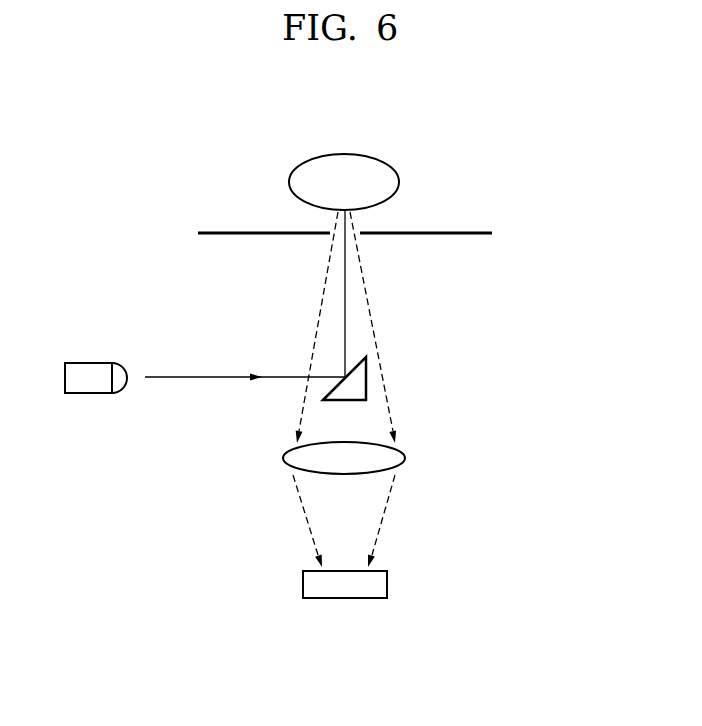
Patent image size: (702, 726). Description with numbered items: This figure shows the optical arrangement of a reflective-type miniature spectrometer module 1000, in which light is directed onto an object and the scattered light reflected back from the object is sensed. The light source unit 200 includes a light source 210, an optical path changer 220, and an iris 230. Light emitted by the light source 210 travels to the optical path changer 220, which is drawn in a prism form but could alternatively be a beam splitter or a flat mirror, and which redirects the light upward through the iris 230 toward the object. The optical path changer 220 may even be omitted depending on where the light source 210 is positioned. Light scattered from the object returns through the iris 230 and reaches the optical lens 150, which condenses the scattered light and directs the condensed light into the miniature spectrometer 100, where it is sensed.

The miniature spectrometer module 1000 is at (508, 152).
The light source unit 200 is at (163, 314).
The light source 210 is at (92, 393).
The optical path changer 220 is at (363, 383).
The iris 230 is at (463, 234).
The optical lens 150 is at (398, 458).
The miniature spectrometer 100 is at (387, 585).